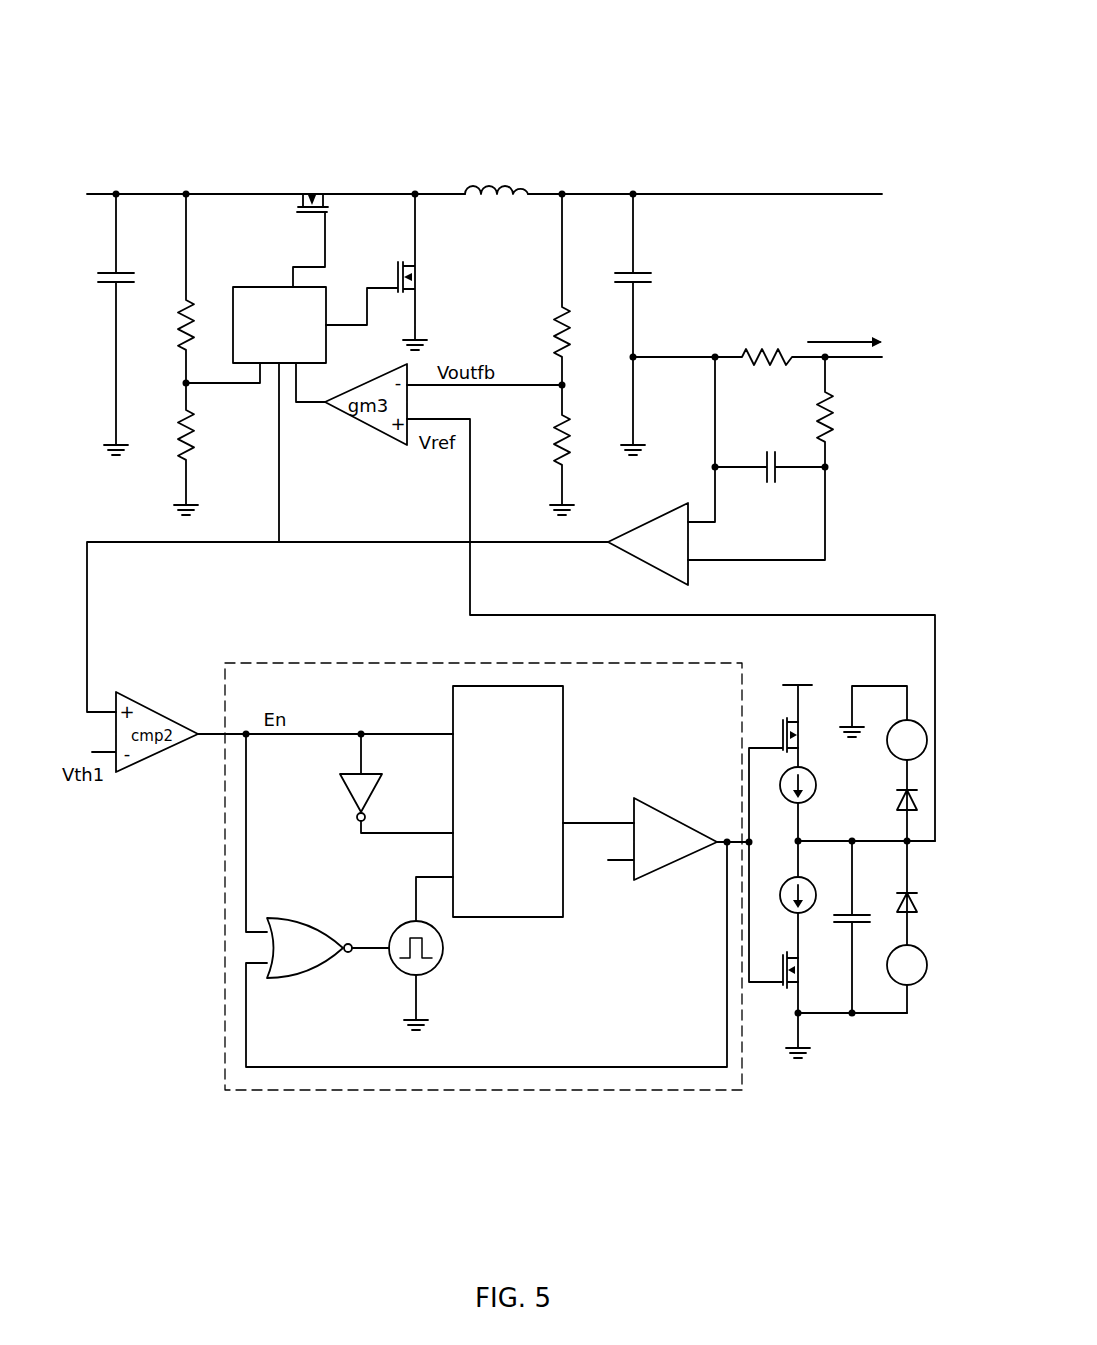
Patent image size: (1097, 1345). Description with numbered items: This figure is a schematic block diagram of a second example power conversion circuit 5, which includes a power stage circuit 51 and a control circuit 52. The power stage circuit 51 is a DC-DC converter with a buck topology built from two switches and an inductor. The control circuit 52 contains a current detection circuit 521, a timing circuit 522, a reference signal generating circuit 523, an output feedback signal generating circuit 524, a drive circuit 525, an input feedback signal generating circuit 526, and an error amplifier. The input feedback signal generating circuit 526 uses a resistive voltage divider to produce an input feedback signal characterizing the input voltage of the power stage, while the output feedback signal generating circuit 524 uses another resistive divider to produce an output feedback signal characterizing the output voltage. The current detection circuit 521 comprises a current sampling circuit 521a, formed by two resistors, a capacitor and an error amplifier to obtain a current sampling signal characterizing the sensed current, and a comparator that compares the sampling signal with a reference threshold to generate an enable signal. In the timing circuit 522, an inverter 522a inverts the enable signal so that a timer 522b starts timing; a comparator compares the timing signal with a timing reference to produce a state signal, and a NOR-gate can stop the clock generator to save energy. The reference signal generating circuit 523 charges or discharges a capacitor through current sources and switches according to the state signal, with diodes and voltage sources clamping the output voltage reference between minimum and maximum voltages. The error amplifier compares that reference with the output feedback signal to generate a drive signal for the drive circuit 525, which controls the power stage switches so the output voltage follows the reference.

The power conversion circuit 5 is at (602, 108).
The power stage circuit 51 is at (377, 162).
The control circuit 52 is at (863, 558).
The current detection circuit 521 is at (425, 568).
The current sampling circuit 521a is at (835, 490).
The timing circuit 522 is at (443, 1092).
The inverter 522a is at (340, 785).
The timer 522b is at (563, 770).
The reference signal generating circuit 523 is at (852, 1035).
The output feedback signal generating circuit 524 is at (578, 366).
The drive circuit 525 is at (251, 285).
The input feedback signal generating circuit 526 is at (205, 418).